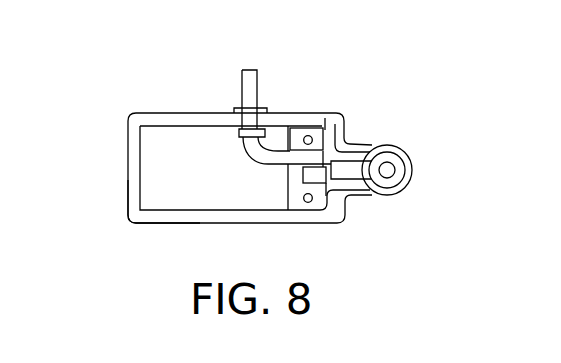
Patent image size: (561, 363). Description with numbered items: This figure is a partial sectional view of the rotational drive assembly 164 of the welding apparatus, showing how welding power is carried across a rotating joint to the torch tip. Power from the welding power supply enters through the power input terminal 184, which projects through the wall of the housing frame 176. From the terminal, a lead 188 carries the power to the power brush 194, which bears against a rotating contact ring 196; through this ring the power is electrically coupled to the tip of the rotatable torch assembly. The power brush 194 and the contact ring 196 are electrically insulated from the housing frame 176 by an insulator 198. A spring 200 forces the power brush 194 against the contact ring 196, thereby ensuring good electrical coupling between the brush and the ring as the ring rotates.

The rotational drive assembly 164 is at (150, 100).
The housing frame 176 is at (165, 226).
The power input terminal 184 is at (242, 82).
The lead 188 is at (274, 152).
The power brush 194 is at (353, 141).
The rotating contact ring 196 is at (418, 170).
The insulator 198 is at (327, 114).
The spring 200 is at (301, 172).